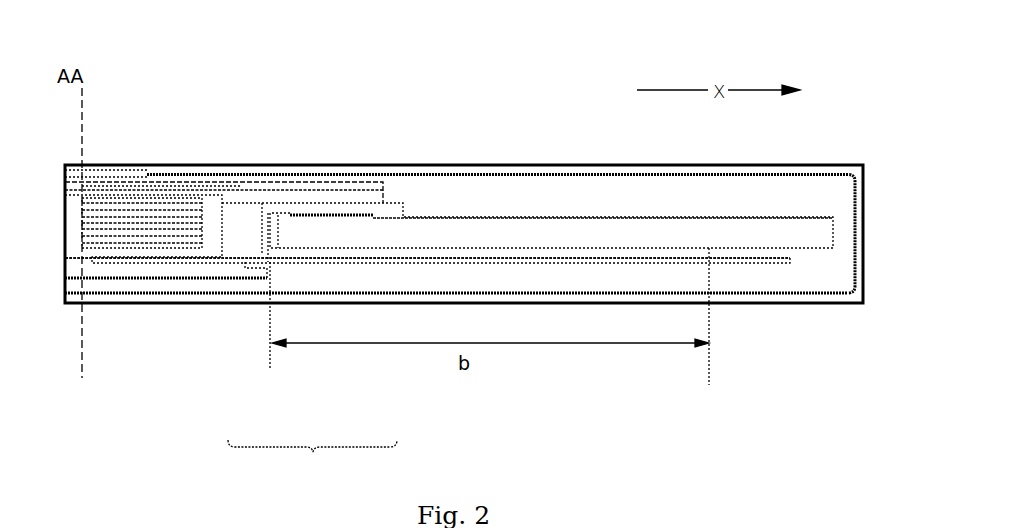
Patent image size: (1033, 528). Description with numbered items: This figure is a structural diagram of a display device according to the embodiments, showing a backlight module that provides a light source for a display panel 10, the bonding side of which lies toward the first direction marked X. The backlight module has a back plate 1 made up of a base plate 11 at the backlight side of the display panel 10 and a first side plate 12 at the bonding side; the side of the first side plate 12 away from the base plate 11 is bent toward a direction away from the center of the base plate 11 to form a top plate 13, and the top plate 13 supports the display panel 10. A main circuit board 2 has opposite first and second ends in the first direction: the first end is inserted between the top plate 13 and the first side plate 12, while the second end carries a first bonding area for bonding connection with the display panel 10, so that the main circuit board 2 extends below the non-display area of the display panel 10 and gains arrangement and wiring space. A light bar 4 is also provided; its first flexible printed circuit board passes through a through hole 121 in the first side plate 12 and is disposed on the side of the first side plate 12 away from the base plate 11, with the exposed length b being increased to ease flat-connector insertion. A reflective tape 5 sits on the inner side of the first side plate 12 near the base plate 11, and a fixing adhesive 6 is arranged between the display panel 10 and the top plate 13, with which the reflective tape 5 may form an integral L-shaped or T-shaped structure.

The back plate 1 is at (312, 461).
The main circuit board 2 is at (522, 207).
The light bar 4 is at (121, 289).
The reflective tape 5 is at (217, 213).
The fixing adhesive 6 is at (337, 178).
The display panel 10 is at (244, 162).
The base plate 11 is at (208, 304).
The first side plate 12 is at (270, 258).
The top plate 13 is at (300, 228).
The through hole 121 is at (242, 256).